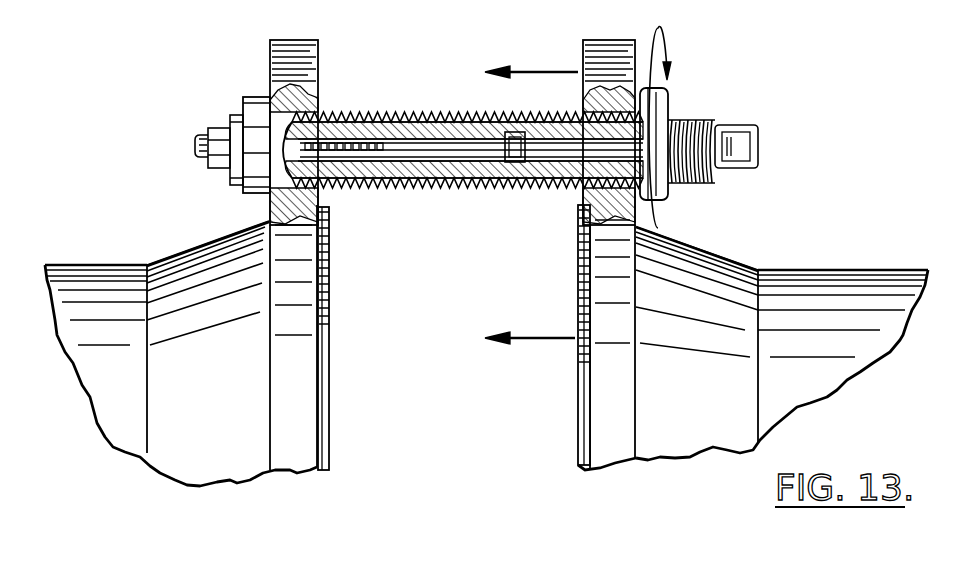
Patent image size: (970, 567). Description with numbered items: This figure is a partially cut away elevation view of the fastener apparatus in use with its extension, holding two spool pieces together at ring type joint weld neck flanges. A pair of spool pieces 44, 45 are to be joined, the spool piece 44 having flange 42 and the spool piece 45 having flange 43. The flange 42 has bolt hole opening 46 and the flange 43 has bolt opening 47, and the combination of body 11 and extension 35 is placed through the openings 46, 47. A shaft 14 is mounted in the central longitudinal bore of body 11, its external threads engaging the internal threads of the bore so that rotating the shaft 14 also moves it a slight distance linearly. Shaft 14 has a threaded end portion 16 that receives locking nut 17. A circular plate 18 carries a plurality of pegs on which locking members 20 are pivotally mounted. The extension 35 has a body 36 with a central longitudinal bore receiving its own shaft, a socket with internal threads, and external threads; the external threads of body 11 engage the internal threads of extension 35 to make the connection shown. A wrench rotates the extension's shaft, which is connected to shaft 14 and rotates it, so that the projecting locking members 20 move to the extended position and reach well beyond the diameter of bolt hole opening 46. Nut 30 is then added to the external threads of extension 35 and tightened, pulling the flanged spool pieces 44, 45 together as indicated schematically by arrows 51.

The body 11 is at (438, 117).
The shaft 14 is at (435, 145).
The threaded end portion 16 is at (195, 145).
The locking nut 17 is at (218, 130).
The circular plate 18 is at (231, 117).
The locking members 20 is at (257, 100).
The nut 30 is at (665, 102).
The extension 35 is at (547, 180).
The body 36 is at (572, 112).
The flange 42 is at (300, 440).
The flange 43 is at (603, 398).
The spool piece 44 is at (113, 408).
The spool piece 45 is at (722, 427).
The bolt hole opening 46 is at (315, 92).
The bolt opening 47 is at (603, 107).
The arrows 51 is at (540, 72).